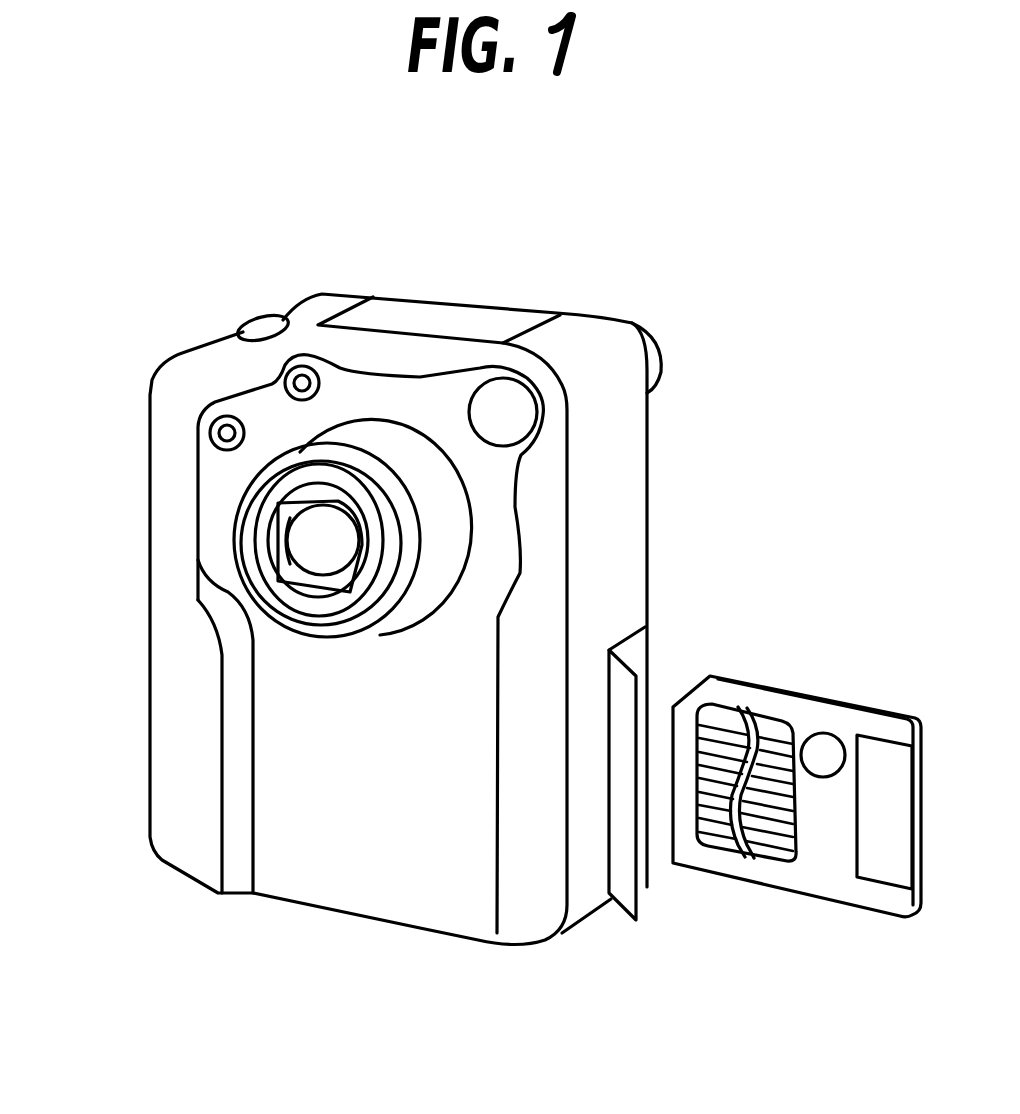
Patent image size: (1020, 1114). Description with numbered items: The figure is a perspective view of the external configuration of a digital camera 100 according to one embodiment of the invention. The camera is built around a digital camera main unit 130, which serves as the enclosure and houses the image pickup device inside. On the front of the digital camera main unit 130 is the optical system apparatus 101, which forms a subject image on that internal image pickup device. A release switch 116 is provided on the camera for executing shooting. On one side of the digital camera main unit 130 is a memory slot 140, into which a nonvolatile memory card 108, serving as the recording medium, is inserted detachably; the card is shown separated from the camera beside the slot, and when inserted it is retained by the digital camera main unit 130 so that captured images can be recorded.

The digital camera 100 is at (753, 381).
The optical system apparatus 101 is at (306, 543).
The nonvolatile memory card 108 is at (828, 693).
The release switch 116 is at (258, 322).
The digital camera main unit 130 is at (447, 313).
The memory slot 140 is at (636, 654).